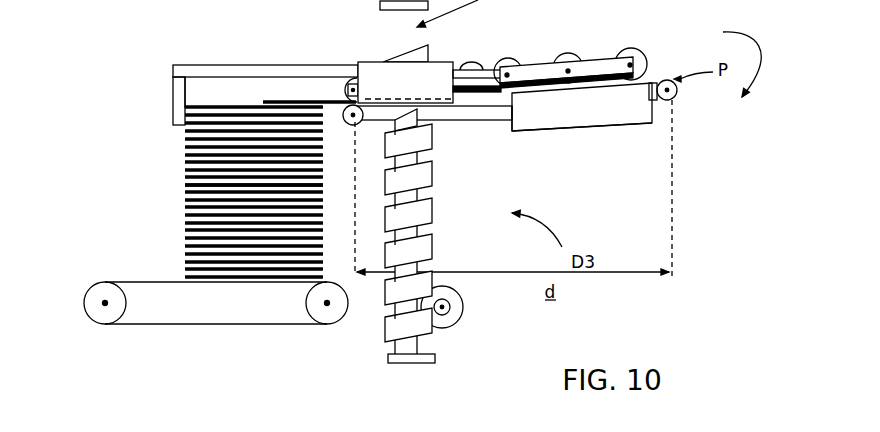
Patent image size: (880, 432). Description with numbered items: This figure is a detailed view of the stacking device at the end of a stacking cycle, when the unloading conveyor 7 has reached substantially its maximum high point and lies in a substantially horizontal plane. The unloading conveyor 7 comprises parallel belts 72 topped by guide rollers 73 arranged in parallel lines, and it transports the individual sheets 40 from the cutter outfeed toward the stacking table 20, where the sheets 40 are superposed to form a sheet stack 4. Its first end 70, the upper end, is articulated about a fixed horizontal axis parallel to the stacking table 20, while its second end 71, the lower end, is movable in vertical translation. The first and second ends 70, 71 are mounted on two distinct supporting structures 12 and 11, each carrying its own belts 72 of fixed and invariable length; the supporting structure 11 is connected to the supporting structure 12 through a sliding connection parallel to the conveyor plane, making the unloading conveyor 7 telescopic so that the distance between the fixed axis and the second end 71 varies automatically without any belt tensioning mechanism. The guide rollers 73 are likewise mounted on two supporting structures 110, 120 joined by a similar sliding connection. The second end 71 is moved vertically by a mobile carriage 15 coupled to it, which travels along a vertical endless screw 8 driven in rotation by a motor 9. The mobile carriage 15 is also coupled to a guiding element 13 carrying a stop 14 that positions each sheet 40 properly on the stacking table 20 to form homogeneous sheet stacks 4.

The sheet stack 4 is at (180, 235).
The sheet 40 is at (185, 188).
The stacking table 20 is at (186, 312).
The guiding element 13 is at (287, 65).
The stop 14 is at (177, 110).
The mobile carriage 15 is at (380, 82).
The supporting structure 110 is at (485, 62).
The guide rollers 73 is at (510, 60).
The supporting structure 120 is at (601, 65).
The first end 70 is at (675, 102).
The second end 71 is at (350, 125).
The supporting structure 11 is at (462, 110).
The parallel belts 72 is at (485, 107).
The supporting structure 12 is at (563, 115).
The unloading conveyor 7 is at (623, 125).
The vertical endless screw 8 is at (420, 243).
The motor 9 is at (462, 310).